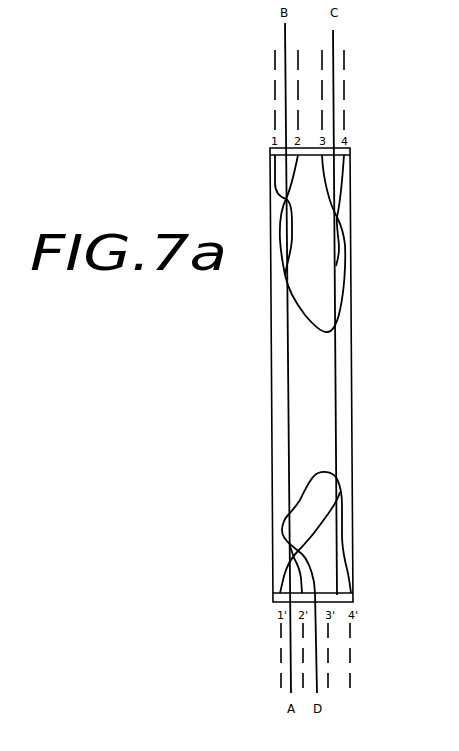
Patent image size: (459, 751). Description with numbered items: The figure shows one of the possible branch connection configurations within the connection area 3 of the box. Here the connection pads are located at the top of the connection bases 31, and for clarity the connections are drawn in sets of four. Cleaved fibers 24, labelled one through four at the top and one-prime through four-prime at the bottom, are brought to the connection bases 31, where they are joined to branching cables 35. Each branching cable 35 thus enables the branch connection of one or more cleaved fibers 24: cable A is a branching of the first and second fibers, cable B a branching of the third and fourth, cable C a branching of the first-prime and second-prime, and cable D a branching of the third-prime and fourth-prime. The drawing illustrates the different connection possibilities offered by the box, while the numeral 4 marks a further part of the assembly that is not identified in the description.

The connection area 3 is at (345, 380).
The connection base 31 is at (350, 152).
The branching cable 35 is at (333, 37).
The cleaved fiber 24 is at (347, 90).
The fabric 4 is at (117, 0).